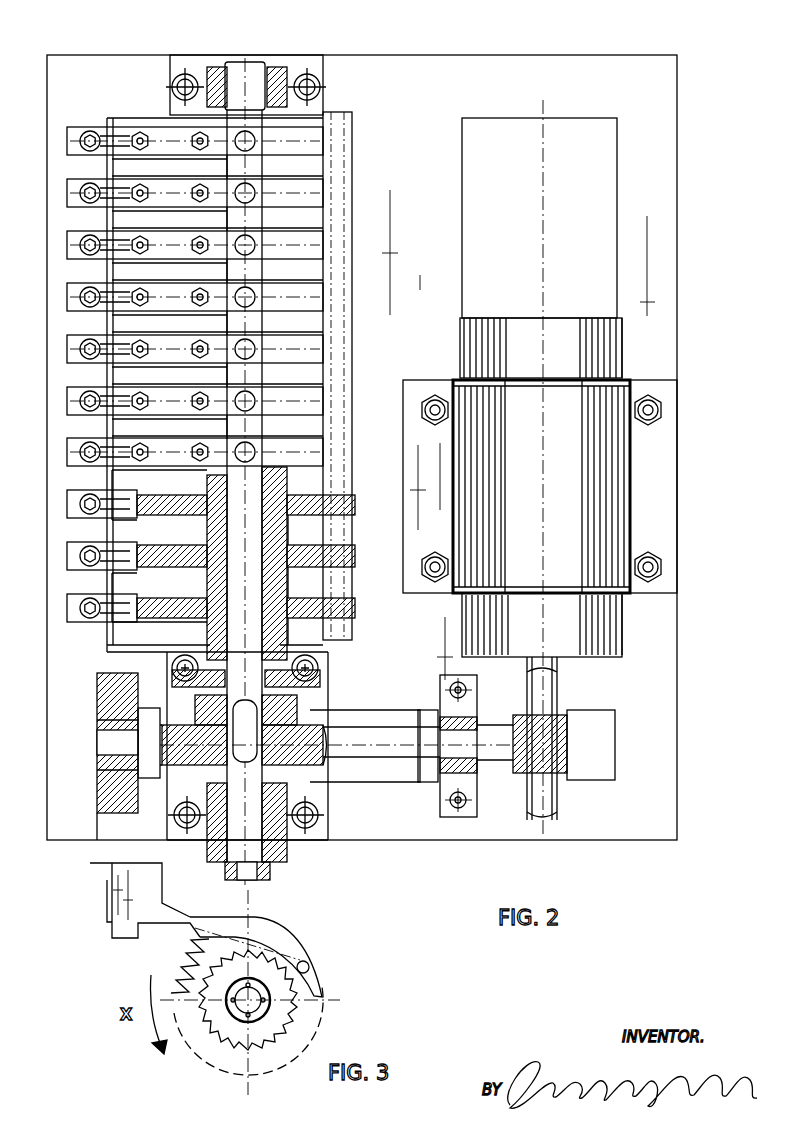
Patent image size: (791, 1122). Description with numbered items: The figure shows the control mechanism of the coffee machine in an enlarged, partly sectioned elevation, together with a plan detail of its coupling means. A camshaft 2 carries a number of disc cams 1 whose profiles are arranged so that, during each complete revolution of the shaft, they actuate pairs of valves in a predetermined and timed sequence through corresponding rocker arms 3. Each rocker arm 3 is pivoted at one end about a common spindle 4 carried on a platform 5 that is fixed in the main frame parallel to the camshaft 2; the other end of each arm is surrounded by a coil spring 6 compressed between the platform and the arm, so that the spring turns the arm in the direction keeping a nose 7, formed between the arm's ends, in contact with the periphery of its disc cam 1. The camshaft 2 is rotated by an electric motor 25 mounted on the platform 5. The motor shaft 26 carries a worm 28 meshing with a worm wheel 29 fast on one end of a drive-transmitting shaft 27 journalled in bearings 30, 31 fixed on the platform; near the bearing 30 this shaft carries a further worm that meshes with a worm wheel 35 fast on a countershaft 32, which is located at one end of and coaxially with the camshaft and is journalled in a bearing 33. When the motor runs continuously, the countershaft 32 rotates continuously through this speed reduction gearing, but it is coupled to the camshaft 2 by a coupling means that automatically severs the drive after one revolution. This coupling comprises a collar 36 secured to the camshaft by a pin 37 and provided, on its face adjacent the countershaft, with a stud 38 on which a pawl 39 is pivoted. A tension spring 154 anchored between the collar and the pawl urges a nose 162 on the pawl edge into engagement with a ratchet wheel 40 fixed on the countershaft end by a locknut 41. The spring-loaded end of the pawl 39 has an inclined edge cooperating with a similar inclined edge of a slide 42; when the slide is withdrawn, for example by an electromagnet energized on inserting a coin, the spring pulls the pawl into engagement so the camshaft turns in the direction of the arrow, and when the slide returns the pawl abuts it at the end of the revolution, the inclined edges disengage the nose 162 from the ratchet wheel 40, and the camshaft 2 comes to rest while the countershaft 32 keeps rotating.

In FIG. 2, the disc cam 1 is at (356, 502).
In FIG. 2, the camshaft 2 is at (252, 72).
In FIG. 2, the rocker arm 3 is at (310, 348).
In FIG. 2, the spindle 4 is at (356, 116).
In FIG. 2, the platform 5 is at (375, 72).
In FIG. 2, the coil spring 6 is at (101, 137).
In FIG. 2, the nose 7 is at (256, 250).
In FIG. 2, the electric motor 25 is at (605, 500).
In FIG. 2, the motor shaft 26 is at (553, 662).
In FIG. 2, the drive-transmitting shaft 27 is at (387, 735).
In FIG. 2, the worm 28 is at (560, 776).
In FIG. 2, the worm wheel 29 is at (540, 822).
In FIG. 2, the bearing 30 is at (100, 817).
In FIG. 2, the bearing 31 is at (447, 818).
In FIG. 2, the countershaft 32 is at (252, 843).
In FIG. 2, the bearing 33 is at (180, 838).
In FIG. 2, the worm wheel 35 is at (297, 675).
In FIG. 2, the collar 36 is at (185, 692).
In FIG. 3, the collar 36 is at (318, 1031).
In FIG. 2, the pin 37 is at (200, 668).
In FIG. 2, the stud 38 is at (313, 703).
In FIG. 3, the stud 38 is at (312, 962).
In FIG. 2, the pawl 39 is at (300, 745).
In FIG. 3, the pawl 39 is at (278, 928).
In FIG. 2, the ratchet wheel 40 is at (100, 714).
In FIG. 3, the ratchet wheel 40 is at (268, 1036).
In FIG. 2, the locknut 41 is at (200, 716).
In FIG. 3, the locknut 41 is at (236, 1016).
In FIG. 3, the slide 42 is at (153, 915).
In FIG. 3, the tension spring 154 is at (184, 970).
In FIG. 3, the nose 162 is at (245, 943).